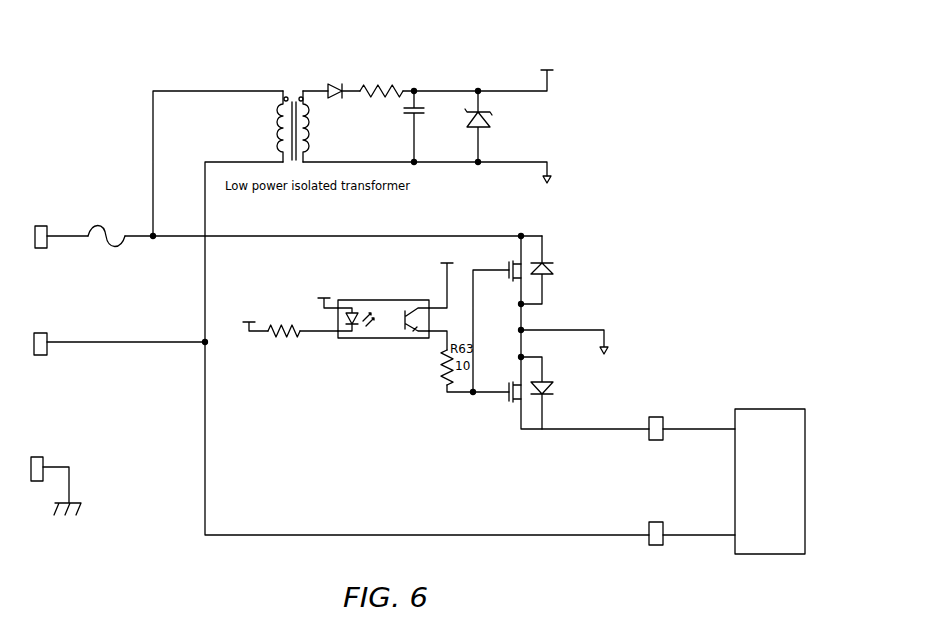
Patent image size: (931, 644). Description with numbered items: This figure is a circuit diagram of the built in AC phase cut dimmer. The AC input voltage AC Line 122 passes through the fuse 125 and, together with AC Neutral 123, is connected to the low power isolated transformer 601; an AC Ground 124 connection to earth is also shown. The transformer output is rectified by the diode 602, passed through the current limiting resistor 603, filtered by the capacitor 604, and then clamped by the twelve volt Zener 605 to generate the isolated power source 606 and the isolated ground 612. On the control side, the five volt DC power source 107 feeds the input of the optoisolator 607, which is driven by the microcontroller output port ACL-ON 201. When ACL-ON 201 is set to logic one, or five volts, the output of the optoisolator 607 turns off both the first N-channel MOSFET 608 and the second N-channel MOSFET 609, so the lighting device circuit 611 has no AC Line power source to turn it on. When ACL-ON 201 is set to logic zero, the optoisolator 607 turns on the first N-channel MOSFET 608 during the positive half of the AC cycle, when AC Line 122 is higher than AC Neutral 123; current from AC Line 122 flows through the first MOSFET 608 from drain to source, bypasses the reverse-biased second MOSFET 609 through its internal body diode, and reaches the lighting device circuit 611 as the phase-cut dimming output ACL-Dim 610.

The AC input voltage AC Line 122 is at (39, 205).
The Fuse 1 125 is at (113, 205).
The AC Neutral 123 is at (53, 315).
The AC Ground 124 is at (37, 437).
The Output Port P0.2 named ACL-ON 201 is at (247, 300).
The +5 VDC power source 107 is at (311, 281).
The isolated power source 12 VDC-ISO 606 is at (544, 58).
The U5 Optoisolator 607 is at (400, 288).
The low power isolated transformer T1 601 is at (293, 70).
The Diode D4 602 is at (336, 64).
The current limiting resistor R61 603 is at (377, 68).
The capacitor C61 604 is at (414, 85).
The 12V Zener Z2 605 is at (479, 85).
The isolated ground GND-ISO 612 is at (583, 193).
The N-CH MOSFET Q4 608 is at (585, 263).
The N-CH MOSFET Q5 609 is at (585, 381).
The AC LINE Dimming by Phase Cut ACL-Dim 610 is at (700, 403).
The lighting device circuit 611 is at (778, 408).